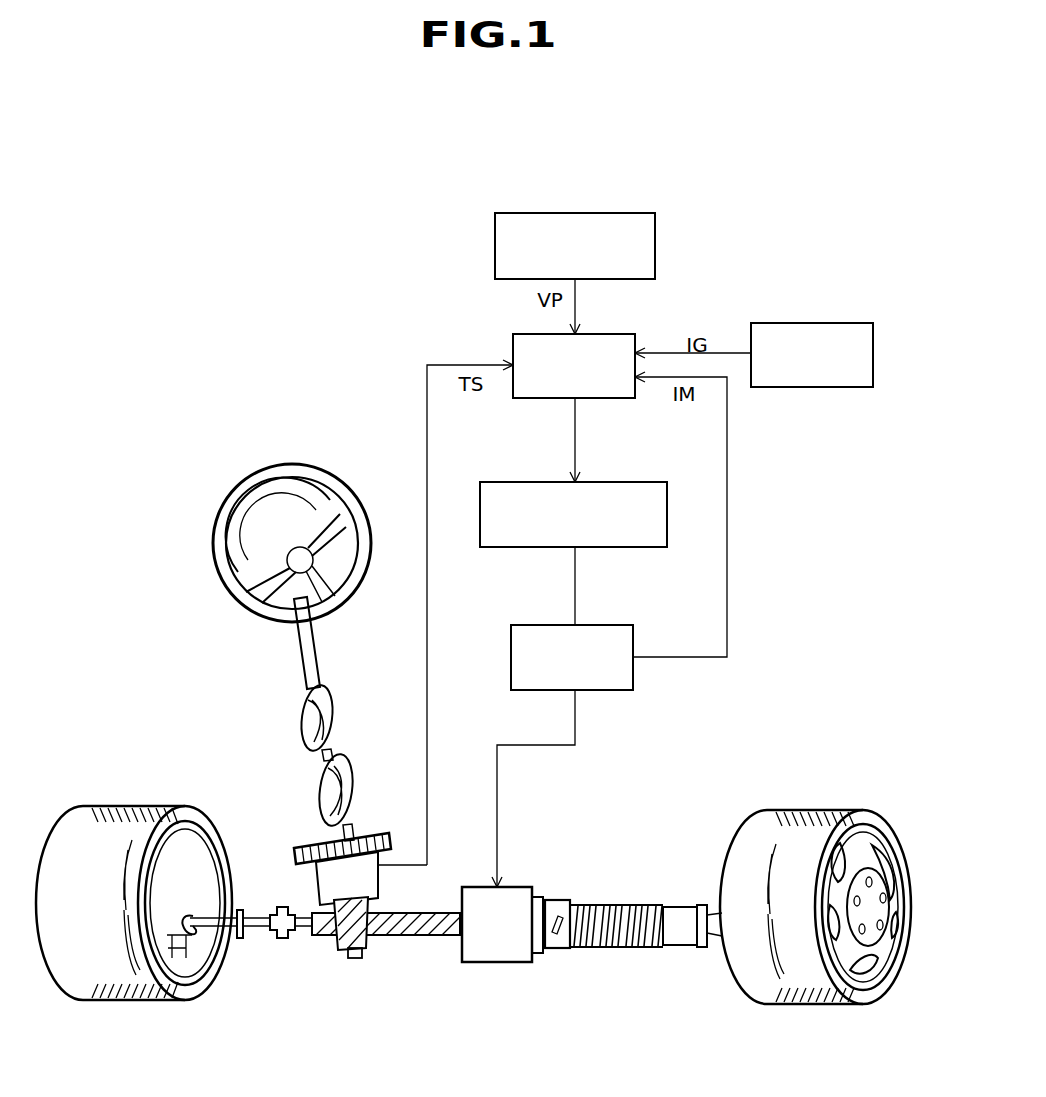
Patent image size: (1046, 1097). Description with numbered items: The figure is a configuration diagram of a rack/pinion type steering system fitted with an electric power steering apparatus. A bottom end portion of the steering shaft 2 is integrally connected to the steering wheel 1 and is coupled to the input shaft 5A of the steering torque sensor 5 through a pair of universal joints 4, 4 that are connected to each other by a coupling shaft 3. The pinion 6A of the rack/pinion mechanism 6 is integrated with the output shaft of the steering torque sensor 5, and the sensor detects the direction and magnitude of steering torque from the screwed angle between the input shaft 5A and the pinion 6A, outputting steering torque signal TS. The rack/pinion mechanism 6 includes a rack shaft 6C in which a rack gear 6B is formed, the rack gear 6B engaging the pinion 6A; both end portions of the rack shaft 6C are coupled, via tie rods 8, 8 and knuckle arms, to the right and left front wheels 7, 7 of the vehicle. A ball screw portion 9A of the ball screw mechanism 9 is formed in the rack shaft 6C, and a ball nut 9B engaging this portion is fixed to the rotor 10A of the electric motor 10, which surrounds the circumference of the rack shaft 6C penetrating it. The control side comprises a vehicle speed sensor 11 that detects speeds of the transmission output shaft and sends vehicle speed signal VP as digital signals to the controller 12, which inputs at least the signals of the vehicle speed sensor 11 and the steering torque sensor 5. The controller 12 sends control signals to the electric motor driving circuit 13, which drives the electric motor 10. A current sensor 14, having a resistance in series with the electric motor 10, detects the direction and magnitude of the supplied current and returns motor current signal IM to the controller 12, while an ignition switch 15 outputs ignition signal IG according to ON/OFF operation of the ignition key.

The steering wheel 1 is at (222, 508).
The steering shaft 2 is at (302, 650).
The coupling shaft 3 is at (333, 753).
The universal joints 4 is at (308, 738).
The steering torque sensor 5 is at (313, 887).
The input shaft 5A is at (353, 830).
The rack/pinion mechanism 6 is at (308, 1038).
The pinion 6A is at (370, 940).
The rack gear 6B is at (327, 936).
The rack shaft 6C is at (677, 933).
The front wheels 7 is at (83, 807).
The tie rods 8 is at (192, 950).
The ball screw mechanism 9 is at (532, 1042).
The ball screw portion 9A is at (613, 950).
The ball nut 9B is at (558, 948).
The electric motor 10 is at (500, 952).
The rotor 10A is at (537, 897).
The vehicle speed sensor 11 is at (532, 213).
The controller 12 is at (525, 334).
The electric motor driving circuit 13 is at (618, 482).
The current sensor 14 is at (627, 625).
The ignition switch 15 is at (805, 323).